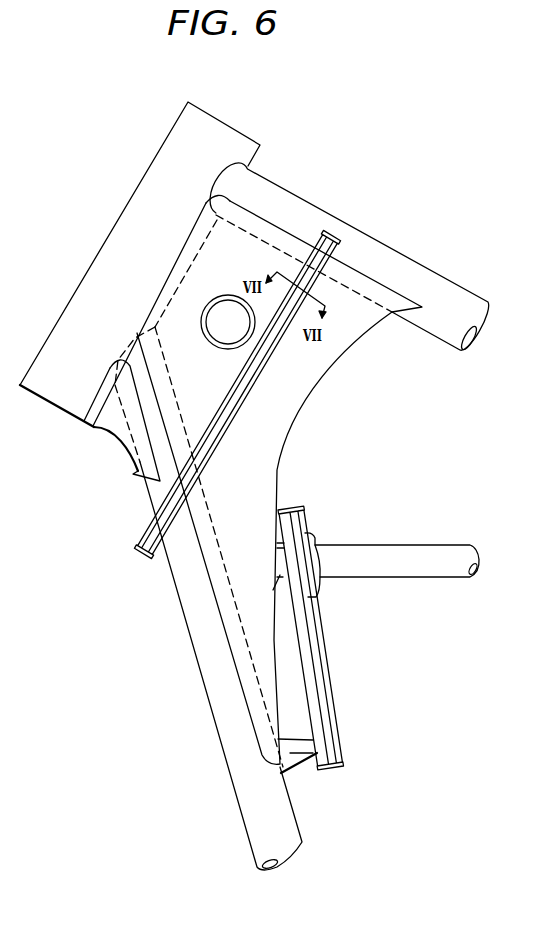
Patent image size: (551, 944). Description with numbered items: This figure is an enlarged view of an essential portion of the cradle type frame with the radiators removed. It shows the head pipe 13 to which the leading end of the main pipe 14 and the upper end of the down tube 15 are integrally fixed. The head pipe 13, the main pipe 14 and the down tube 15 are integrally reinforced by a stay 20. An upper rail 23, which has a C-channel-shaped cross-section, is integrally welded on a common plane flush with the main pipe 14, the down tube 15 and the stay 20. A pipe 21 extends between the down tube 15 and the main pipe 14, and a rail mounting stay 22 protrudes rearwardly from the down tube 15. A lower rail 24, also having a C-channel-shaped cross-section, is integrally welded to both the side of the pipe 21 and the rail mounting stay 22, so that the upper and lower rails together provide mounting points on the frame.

The head pipe 13 is at (103, 283).
The main pipe 14 is at (472, 311).
The down tube 15 is at (245, 797).
The stay 20 is at (162, 418).
The pipe 21 is at (382, 558).
The rail mounting stay 22 is at (297, 757).
The upper rail 23 is at (140, 541).
The lower rail 24 is at (318, 653).